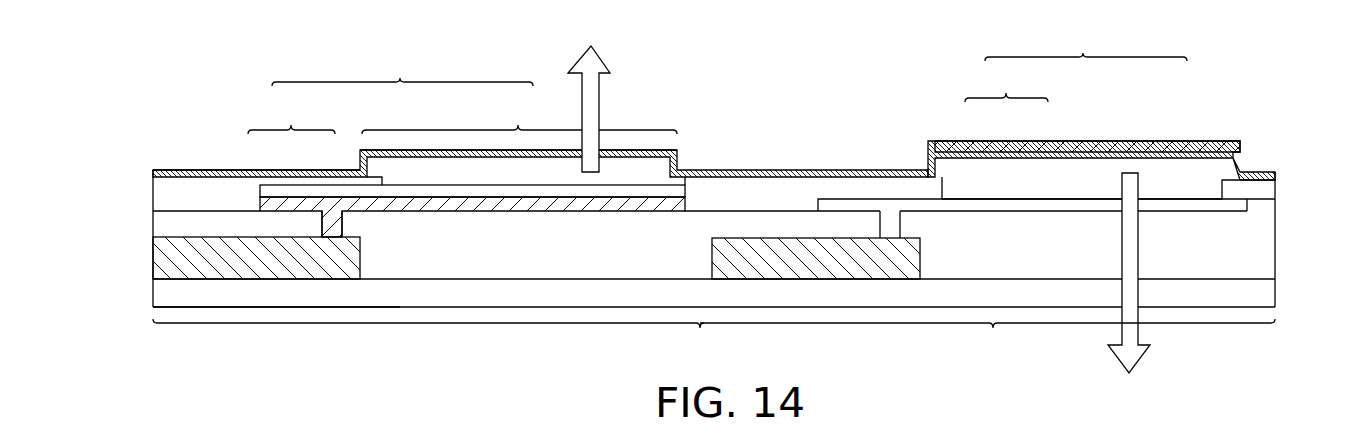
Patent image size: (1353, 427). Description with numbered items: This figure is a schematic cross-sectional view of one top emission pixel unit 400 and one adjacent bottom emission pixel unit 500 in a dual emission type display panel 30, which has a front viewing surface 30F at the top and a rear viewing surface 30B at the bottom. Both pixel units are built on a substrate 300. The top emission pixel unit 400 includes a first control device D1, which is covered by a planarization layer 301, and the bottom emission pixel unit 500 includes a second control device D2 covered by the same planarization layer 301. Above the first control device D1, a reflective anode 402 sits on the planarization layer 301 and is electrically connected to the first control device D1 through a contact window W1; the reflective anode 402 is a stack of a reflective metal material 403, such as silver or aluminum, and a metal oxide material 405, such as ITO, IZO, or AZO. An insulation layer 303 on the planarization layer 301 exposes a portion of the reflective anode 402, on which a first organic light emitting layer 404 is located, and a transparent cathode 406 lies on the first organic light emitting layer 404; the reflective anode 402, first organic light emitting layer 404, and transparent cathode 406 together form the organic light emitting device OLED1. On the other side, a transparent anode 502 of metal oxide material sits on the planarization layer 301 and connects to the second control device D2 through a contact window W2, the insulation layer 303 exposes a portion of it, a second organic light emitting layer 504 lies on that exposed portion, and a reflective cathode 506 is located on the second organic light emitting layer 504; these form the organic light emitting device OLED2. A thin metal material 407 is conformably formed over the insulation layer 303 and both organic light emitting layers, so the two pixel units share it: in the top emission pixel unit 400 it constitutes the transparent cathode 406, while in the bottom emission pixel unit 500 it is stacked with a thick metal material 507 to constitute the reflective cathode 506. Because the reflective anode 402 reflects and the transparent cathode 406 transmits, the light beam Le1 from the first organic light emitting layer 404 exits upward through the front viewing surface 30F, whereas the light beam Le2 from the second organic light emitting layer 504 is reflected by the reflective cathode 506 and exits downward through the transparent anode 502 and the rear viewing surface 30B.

The dual emission type display panel 30 is at (708, 207).
The front viewing surface 30F is at (191, 124).
The rear viewing surface 30B is at (190, 350).
The substrate 300 is at (153, 294).
The planarization layer 301 is at (153, 229).
The insulation layer 303 is at (153, 200).
The first control device D1 is at (153, 259).
The second control device D2 is at (790, 263).
The contact window W1 is at (320, 225).
The contact window W2 is at (908, 218).
The top emission pixel unit 400 is at (428, 342).
The bottom emission pixel unit 500 is at (987, 342).
The organic light emitting device OLED1 is at (466, 141).
The organic light emitting device OLED2 is at (1046, 116).
The reflective anode 402 is at (466, 164).
The reflective metal material 403 is at (337, 203).
The metal oxide material 405 is at (285, 192).
The first organic light emitting layer 404 is at (383, 168).
The transparent cathode 406 is at (518, 124).
The thin metal material 407 is at (153, 175).
The transparent anode 502 is at (1092, 208).
The second organic light emitting layer 504 is at (1163, 182).
The reflective cathode 506 is at (1087, 110).
The thick metal material 507 is at (987, 148).
The light beam Le1 is at (601, 93).
The light beam Le2 is at (1141, 351).